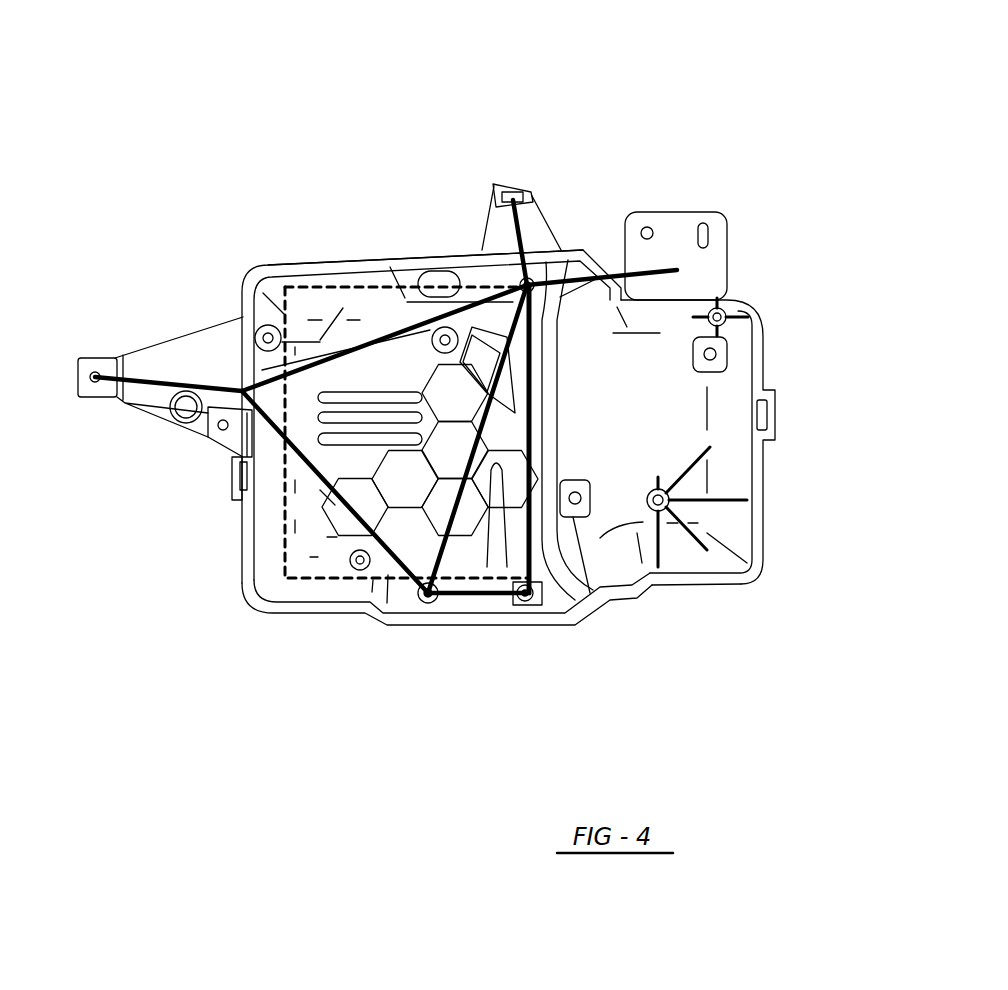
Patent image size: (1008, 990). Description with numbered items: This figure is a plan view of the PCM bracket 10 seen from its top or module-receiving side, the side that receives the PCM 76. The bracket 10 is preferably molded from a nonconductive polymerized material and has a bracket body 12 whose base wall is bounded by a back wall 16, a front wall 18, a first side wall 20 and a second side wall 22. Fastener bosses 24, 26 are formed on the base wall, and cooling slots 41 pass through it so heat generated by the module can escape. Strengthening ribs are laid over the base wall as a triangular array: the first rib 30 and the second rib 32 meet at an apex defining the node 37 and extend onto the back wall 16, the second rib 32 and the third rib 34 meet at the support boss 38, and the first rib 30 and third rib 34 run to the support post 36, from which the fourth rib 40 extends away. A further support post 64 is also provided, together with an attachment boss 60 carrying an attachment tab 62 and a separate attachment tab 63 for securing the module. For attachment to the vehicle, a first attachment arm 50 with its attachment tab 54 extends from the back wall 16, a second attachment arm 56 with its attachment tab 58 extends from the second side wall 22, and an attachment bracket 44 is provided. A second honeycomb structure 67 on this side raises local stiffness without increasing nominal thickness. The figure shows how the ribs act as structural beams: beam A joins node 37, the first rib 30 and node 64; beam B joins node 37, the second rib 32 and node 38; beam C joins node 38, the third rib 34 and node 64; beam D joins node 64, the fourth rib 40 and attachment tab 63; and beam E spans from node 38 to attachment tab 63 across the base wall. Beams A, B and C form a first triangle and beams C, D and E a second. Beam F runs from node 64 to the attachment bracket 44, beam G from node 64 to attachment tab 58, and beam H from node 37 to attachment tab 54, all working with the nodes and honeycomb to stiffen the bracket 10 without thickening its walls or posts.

The bracket 10 is at (233, 142).
The bracket body 12 is at (333, 614).
The back wall 16 is at (240, 512).
The front wall 18 is at (757, 517).
The first side wall 20 is at (682, 586).
The second side wall 22 is at (332, 263).
The fastener boss 24 is at (720, 363).
The fastener boss 26 is at (607, 525).
The first rib 30 is at (315, 358).
The second rib 32 is at (322, 497).
The third rib 34 is at (476, 582).
The support post 36 is at (610, 253).
The node 37 is at (174, 398).
The support boss 38 is at (428, 604).
The fourth rib 40 is at (555, 582).
The cooling slots 41 is at (252, 432).
The attachment bracket 44 is at (677, 230).
The first attachment arm 50 is at (175, 350).
The attachment tab 54 is at (85, 358).
The second attachment arm 56 is at (494, 200).
The attachment tab 58 is at (533, 183).
The attachment boss 60 is at (443, 278).
The attachment tab 62 is at (413, 287).
The attachment tab 63 is at (530, 605).
The support post 64 is at (512, 367).
The second honeycomb structure 67 is at (325, 497).
The PCM 76 is at (287, 285).
The beam A is at (380, 332).
The beam B is at (345, 555).
The beam C is at (492, 600).
The beam D is at (585, 597).
The beam E is at (507, 605).
The beam F is at (623, 250).
The beam G is at (533, 197).
The beam H is at (148, 380).